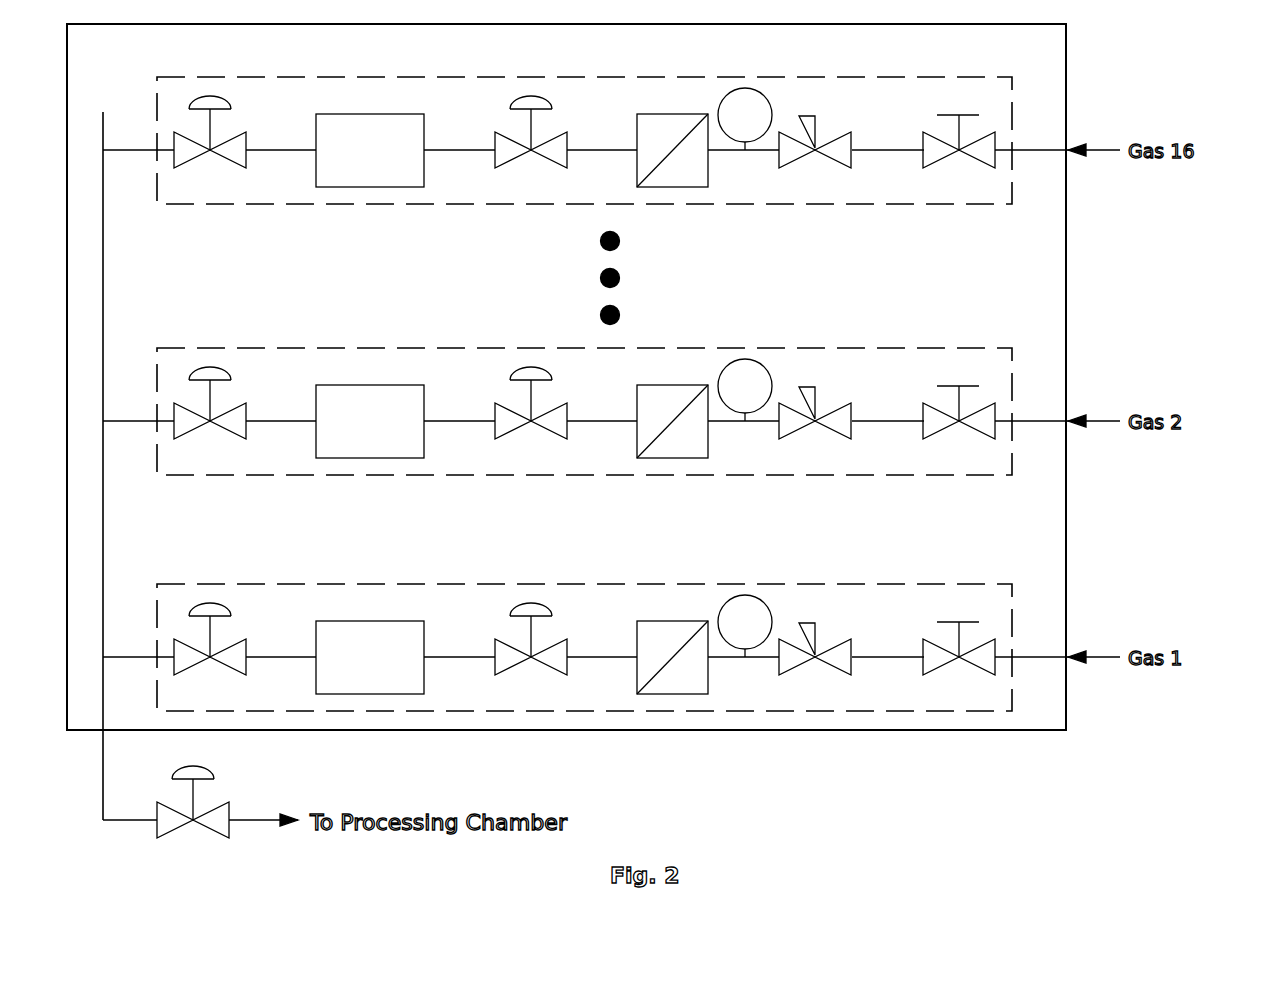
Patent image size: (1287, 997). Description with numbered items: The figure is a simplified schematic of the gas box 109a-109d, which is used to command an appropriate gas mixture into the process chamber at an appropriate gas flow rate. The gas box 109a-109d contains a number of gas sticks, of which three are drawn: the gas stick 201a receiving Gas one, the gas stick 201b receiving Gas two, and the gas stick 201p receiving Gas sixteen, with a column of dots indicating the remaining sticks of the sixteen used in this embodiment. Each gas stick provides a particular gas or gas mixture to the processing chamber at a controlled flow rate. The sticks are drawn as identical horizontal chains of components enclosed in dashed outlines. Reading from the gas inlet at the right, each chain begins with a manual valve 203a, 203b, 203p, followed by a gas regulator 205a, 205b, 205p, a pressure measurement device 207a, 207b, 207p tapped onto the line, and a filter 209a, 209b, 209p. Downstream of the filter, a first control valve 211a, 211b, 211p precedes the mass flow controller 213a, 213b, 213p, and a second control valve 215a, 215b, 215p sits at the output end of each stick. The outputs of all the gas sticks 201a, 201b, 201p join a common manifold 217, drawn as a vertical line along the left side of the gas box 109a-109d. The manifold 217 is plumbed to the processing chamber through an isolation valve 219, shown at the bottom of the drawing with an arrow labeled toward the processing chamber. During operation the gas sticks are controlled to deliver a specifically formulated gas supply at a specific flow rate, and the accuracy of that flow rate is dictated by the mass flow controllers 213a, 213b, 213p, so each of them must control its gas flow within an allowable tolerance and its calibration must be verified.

The gas box 109a-109d is at (1066, 78).
The gas stick 201p is at (937, 78).
The gas stick 201b is at (594, 392).
The gas stick 201a is at (594, 628).
The manual valve 203p is at (923, 132).
The manual valve 203b is at (920, 402).
The manual valve 203a is at (920, 638).
The gas regulator 205p is at (834, 153).
The gas regulator 205b is at (804, 431).
The gas regulator 205a is at (804, 667).
The pressure measurement device 207p is at (745, 119).
The pressure measurement device 207b is at (745, 390).
The pressure measurement device 207a is at (745, 626).
The filter 209p is at (655, 132).
The filter 209b is at (643, 411).
The filter 209a is at (643, 647).
The control valve 211p is at (548, 152).
The control valve 211b is at (518, 421).
The control valve 211a is at (518, 657).
The mass flow controller 213p is at (335, 132).
The mass flow controller 213b is at (340, 410).
The mass flow controller 213a is at (340, 646).
The control valve 215p is at (190, 151).
The control valve 215b is at (220, 421).
The control valve 215a is at (220, 657).
The manifold 217 is at (103, 293).
The isolation valve 219 is at (210, 823).